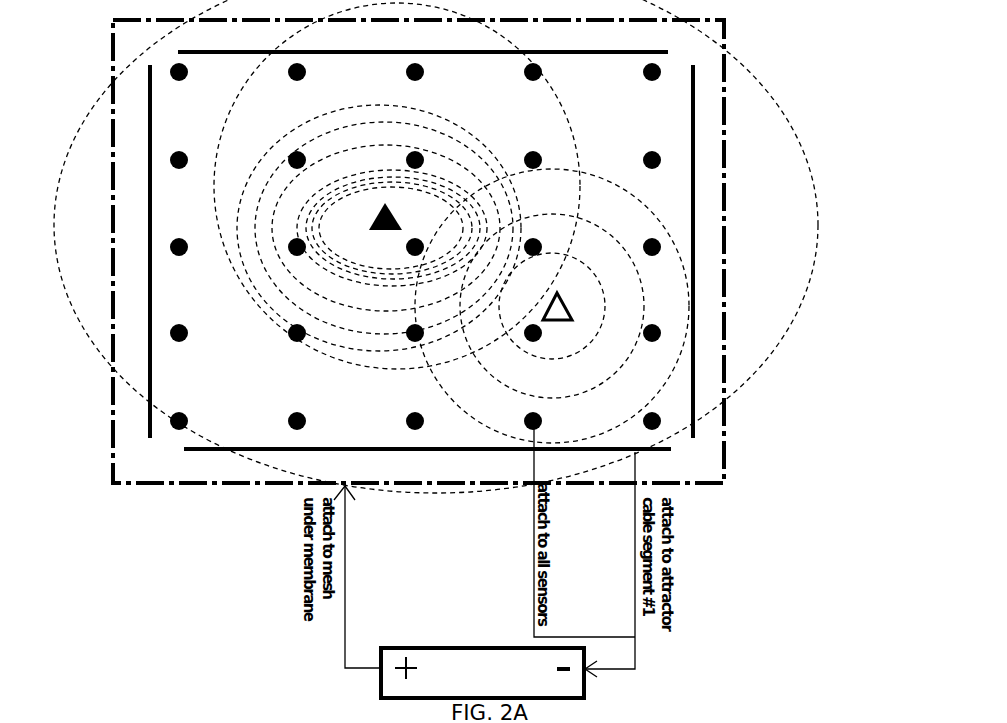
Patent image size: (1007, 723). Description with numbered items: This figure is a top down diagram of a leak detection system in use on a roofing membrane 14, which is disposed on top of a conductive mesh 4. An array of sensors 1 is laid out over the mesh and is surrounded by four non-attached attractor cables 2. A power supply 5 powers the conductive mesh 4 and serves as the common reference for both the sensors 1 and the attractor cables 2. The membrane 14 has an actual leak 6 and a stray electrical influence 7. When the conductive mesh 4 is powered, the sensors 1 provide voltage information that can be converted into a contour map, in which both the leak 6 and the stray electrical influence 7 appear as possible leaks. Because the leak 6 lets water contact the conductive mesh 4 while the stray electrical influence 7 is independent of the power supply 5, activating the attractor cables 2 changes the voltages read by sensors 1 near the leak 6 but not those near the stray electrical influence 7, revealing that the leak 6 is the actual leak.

The sensor 1 is at (661, 245).
The attractor cable 2 is at (698, 331).
The conductive mesh 4 is at (184, 487).
The power supply 5 is at (405, 646).
The leak 6 is at (378, 231).
The stray electrical influence 7 is at (577, 321).
The roofing membrane 14 is at (656, 125).